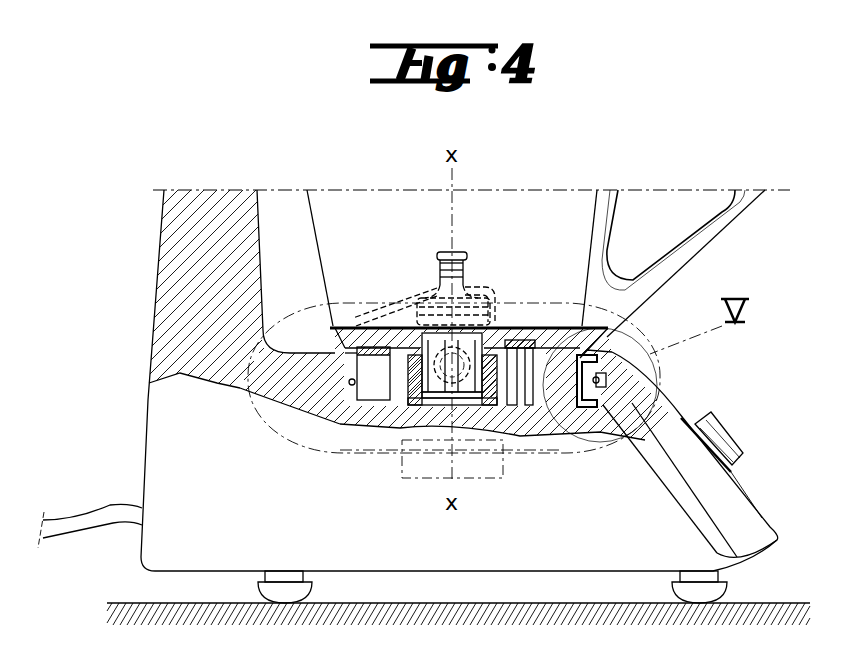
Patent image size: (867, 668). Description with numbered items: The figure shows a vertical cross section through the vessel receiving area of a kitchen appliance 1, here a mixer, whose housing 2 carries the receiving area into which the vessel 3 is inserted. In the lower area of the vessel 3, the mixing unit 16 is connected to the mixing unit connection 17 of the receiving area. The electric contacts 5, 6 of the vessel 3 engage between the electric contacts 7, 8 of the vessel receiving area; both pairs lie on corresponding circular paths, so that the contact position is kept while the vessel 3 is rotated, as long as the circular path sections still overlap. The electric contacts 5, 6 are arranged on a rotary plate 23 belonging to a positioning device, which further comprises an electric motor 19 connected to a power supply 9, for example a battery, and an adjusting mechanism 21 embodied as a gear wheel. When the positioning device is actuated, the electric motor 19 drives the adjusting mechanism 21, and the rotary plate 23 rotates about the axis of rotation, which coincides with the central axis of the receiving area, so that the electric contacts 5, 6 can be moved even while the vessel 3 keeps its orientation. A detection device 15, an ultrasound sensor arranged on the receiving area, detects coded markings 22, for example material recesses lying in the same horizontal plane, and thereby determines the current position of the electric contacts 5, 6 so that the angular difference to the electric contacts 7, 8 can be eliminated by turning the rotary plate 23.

The kitchen appliance 1 is at (158, 140).
The housing 2 is at (176, 247).
The vessel 3 is at (333, 212).
The electric contact 5 is at (528, 375).
The electric contact 6 is at (536, 336).
The electric contact 7 is at (493, 350).
The electric contact 8 is at (545, 400).
The power supply 9 is at (85, 520).
The detection device 15 is at (606, 381).
The mixing unit 16 is at (417, 258).
The mixing unit connection 17 is at (424, 356).
The electric motor 19 is at (498, 414).
The adjusting mechanism 21 is at (407, 420).
The marking 22 is at (342, 396).
The rotary plate 23 is at (356, 352).